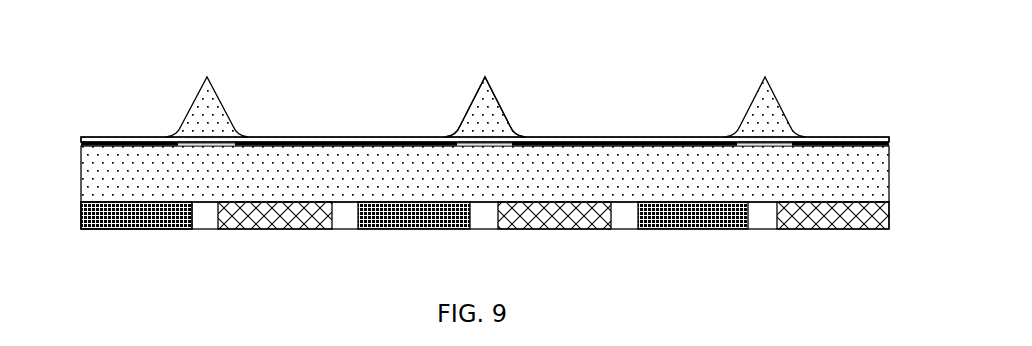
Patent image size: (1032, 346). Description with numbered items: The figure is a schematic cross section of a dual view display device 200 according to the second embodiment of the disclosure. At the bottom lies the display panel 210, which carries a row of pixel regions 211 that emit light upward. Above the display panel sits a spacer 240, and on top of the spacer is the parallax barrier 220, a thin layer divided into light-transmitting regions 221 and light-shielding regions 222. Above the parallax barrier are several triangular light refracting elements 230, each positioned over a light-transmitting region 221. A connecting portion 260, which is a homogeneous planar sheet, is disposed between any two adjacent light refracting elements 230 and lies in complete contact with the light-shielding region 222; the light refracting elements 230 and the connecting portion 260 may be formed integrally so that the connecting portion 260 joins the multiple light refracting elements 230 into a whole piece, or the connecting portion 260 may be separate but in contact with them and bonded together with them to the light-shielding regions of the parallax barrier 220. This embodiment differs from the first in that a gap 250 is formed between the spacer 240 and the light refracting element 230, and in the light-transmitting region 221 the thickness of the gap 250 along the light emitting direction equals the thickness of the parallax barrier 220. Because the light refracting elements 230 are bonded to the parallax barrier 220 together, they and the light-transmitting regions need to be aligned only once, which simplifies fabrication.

The dual view display device 200 is at (80, 65).
The display panel 210 is at (100, 214).
The pixel region 211 is at (169, 213).
The parallax barrier 220 is at (452, 100).
The light-transmitting region 221 is at (482, 143).
The light-shielding region 222 is at (300, 140).
The light refracting element 230 is at (203, 95).
The spacer 240 is at (110, 178).
The gap 250 is at (472, 143).
The connecting portion 260 is at (633, 140).